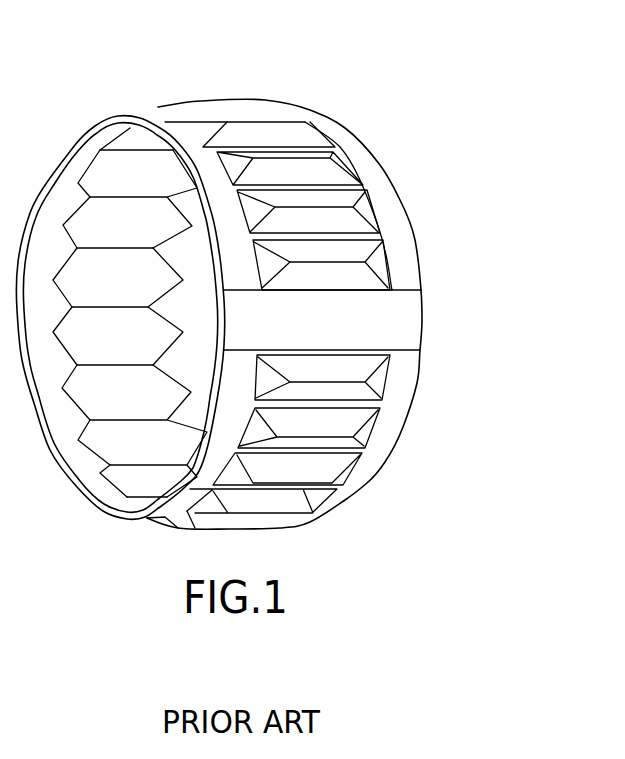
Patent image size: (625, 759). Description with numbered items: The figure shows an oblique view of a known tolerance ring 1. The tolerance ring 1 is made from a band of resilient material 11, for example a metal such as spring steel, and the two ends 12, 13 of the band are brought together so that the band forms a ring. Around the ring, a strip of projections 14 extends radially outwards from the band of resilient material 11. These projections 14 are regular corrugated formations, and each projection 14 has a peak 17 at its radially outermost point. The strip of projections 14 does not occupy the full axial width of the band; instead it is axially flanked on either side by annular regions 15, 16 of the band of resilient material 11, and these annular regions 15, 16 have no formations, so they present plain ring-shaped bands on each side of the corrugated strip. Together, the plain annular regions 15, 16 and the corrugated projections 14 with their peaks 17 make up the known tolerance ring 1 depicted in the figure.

The tolerance ring 1 is at (337, 118).
The band of resilient material 11 is at (417, 252).
The end of the band 12 is at (422, 290).
The end of the band 13 is at (420, 350).
The projections 14 is at (303, 487).
The annular region 15 is at (367, 168).
The annular region 16 is at (156, 111).
The peak 17 is at (340, 385).